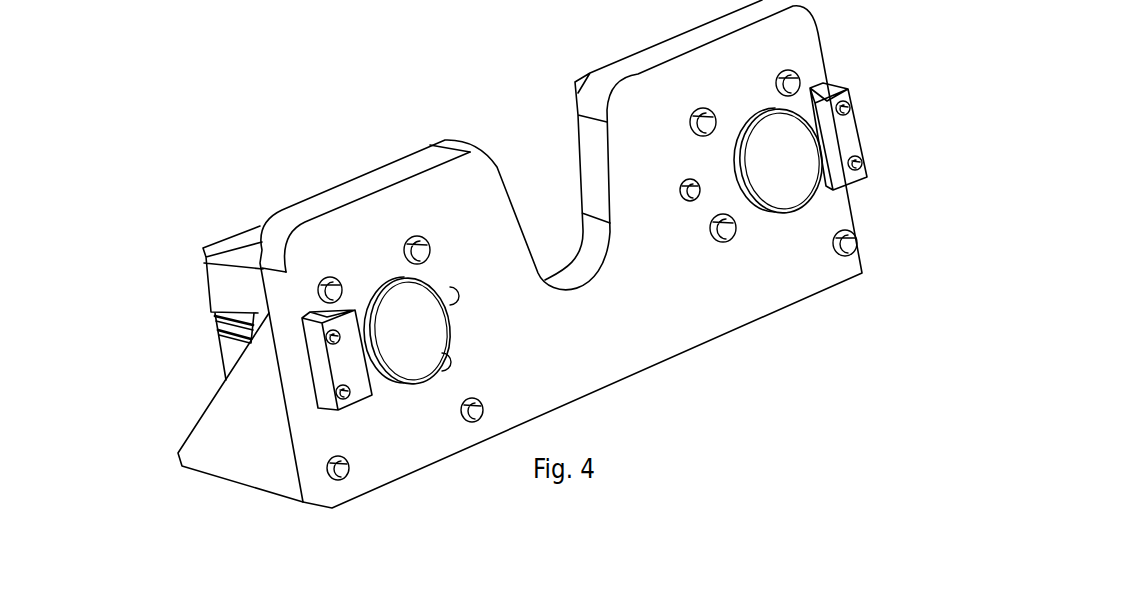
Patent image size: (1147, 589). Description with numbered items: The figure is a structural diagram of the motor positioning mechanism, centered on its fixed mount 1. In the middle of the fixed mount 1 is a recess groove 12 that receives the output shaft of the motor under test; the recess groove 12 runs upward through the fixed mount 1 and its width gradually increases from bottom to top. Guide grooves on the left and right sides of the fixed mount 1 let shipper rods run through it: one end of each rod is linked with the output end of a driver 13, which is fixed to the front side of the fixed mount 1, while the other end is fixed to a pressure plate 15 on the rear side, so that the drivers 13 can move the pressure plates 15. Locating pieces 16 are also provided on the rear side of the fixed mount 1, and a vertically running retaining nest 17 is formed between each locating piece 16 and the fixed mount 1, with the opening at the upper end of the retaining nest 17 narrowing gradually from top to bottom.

The fixed mount 1 is at (410, 190).
The recess groove 12 is at (532, 172).
The driver 13 is at (237, 287).
The pressure plate 15 is at (395, 317).
The locating piece 16 is at (337, 362).
The retaining nest 17 is at (333, 313).